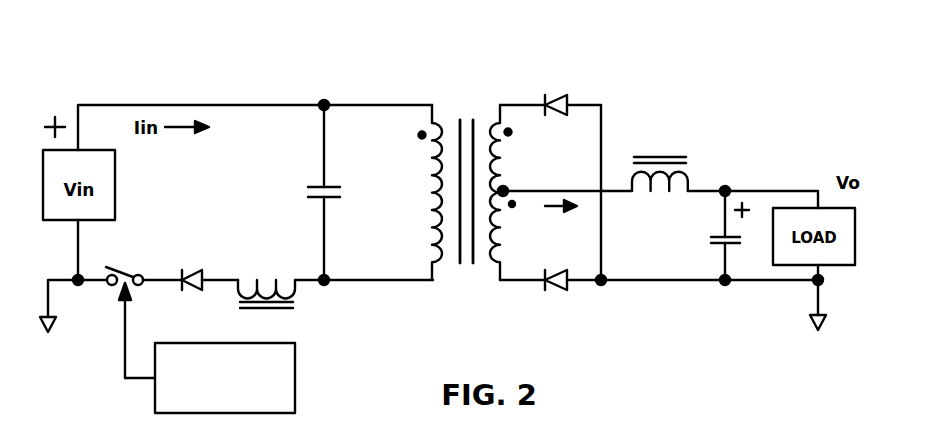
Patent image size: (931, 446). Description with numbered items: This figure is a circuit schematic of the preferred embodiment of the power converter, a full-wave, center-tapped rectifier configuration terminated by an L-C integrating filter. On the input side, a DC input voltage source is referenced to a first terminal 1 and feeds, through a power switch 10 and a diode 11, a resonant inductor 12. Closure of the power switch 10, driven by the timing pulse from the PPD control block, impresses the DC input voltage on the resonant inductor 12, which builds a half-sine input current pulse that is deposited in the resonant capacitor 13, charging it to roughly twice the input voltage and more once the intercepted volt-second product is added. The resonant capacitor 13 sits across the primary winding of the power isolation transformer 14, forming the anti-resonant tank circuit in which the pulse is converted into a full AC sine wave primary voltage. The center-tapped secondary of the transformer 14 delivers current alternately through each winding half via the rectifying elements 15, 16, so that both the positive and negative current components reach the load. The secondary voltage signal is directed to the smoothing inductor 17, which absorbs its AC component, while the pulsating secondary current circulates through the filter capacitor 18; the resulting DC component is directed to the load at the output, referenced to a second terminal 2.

The input ground terminal 1 is at (59, 310).
The output ground terminal 2 is at (829, 309).
The power switch 10 is at (186, 325).
The diode 11 is at (207, 263).
The resonant inductor 12 is at (281, 272).
The resonant capacitor 13 is at (370, 195).
The power isolation transformer 14 is at (487, 189).
The rectifying element 15 is at (553, 262).
The rectifying element 16 is at (550, 187).
The smoothing inductor 17 is at (660, 189).
The filter capacitor 18 is at (709, 235).